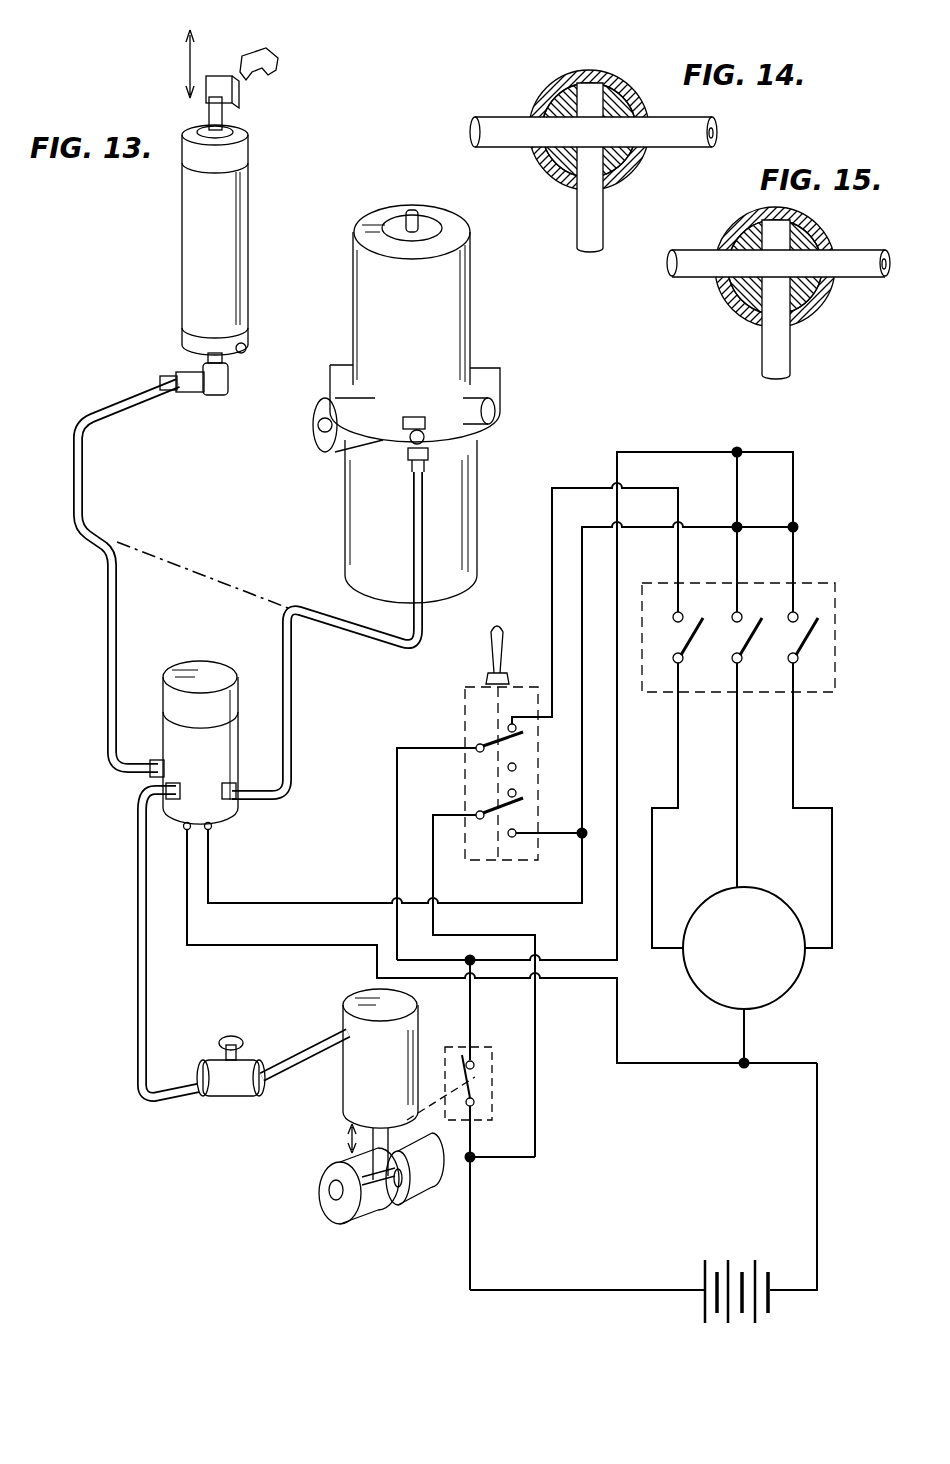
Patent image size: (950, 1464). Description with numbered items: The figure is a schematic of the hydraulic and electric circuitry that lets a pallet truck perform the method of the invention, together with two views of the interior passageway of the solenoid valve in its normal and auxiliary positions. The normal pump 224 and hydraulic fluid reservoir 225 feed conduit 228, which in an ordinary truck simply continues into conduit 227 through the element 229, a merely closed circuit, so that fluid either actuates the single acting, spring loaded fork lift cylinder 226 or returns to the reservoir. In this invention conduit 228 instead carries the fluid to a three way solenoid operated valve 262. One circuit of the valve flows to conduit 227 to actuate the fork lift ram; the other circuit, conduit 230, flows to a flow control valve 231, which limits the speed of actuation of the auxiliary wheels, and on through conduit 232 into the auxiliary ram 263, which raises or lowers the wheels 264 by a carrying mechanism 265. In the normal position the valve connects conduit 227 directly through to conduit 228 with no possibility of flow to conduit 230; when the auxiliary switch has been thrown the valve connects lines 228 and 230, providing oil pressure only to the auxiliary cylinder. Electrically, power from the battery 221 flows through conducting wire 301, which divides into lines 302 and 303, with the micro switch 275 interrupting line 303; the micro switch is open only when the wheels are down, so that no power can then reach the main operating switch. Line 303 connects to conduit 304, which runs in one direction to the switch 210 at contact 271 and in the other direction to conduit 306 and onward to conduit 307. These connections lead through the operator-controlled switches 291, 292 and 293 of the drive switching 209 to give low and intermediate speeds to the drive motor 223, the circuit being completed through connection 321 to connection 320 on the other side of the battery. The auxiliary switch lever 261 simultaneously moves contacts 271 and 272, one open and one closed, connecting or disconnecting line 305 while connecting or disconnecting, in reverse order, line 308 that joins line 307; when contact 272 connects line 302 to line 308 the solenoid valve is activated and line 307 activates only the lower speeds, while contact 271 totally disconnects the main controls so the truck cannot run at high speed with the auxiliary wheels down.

In FIG. 13, the motor reversing switch 209 is at (876, 548).
In FIG. 13, the control switch 210 is at (450, 732).
In FIG. 13, the battery 221 is at (705, 1305).
In FIG. 13, the pallet truck drive motor 223 is at (782, 965).
In FIG. 13, the pump 224 is at (462, 298).
In FIG. 13, the hydraulic fluid reservoir 225 is at (462, 463).
In FIG. 13, the fork lift cylinder 226 is at (250, 202).
In FIG. 13, the conduit 227 is at (84, 472).
In FIG. 14, the conduit 227 is at (511, 116).
In FIG. 15, the conduit 227 is at (688, 280).
In FIG. 13, the conduit 228 is at (347, 640).
In FIG. 14, the conduit 228 is at (668, 150).
In FIG. 15, the conduit 228 is at (856, 278).
In FIG. 13, the closed circuit element 229 is at (254, 586).
In FIG. 13, the conduit 230 is at (136, 972).
In FIG. 14, the conduit 230 is at (601, 208).
In FIG. 15, the conduit 230 is at (791, 352).
In FIG. 13, the flow control valve 231 is at (222, 1100).
In FIG. 13, the conduit 232 is at (297, 1064).
In FIG. 13, the auxiliary switch lever 261 is at (505, 650).
In FIG. 13, the three way solenoid operated valve 262 is at (225, 730).
In FIG. 14, the three way solenoid operated valve 262 is at (601, 53).
In FIG. 15, the three way solenoid operated valve 262 is at (723, 331).
In FIG. 13, the auxiliary ram 263 is at (352, 1095).
In FIG. 13, the wheels 264 is at (355, 1222).
In FIG. 13, the carrying mechanism 265 is at (375, 1155).
In FIG. 13, the switch contact 271 is at (483, 756).
In FIG. 13, the switch contact 272 is at (490, 822).
In FIG. 13, the micro switch 275 is at (494, 1116).
In FIG. 13, the switch 291 is at (810, 640).
In FIG. 13, the switch 292 is at (745, 650).
In FIG. 13, the switch blade 293 is at (688, 660).
In FIG. 13, the conducting wire 301 is at (493, 1292).
In FIG. 13, the conducting line 302 is at (512, 1160).
In FIG. 13, the conducting line 303 is at (470, 1015).
In FIG. 13, the electrical carrying conduit 304 is at (793, 480).
In FIG. 13, the electrical line 305 is at (548, 722).
In FIG. 13, the electrical carrying conduit 306 is at (738, 480).
In FIG. 13, the electrical conduit 307 is at (582, 725).
In FIG. 13, the line 308 is at (556, 838).
In FIG. 13, the electrical connection 320 is at (818, 1190).
In FIG. 13, the electrical connection 321 is at (745, 1040).